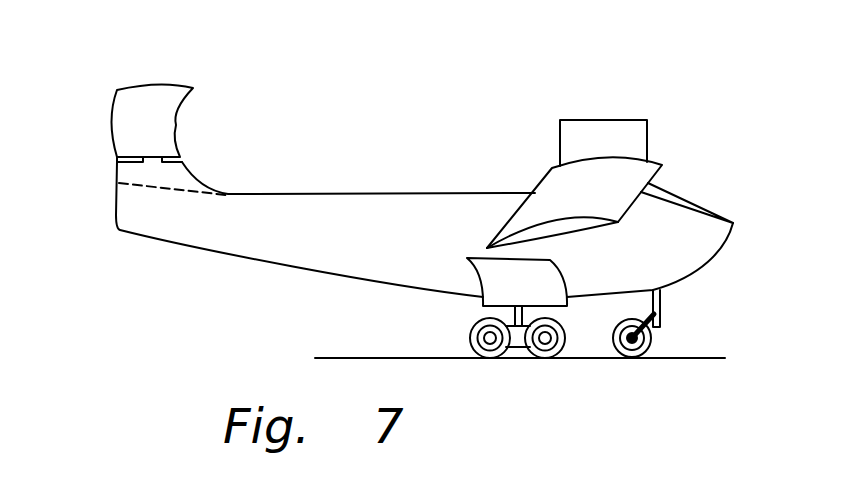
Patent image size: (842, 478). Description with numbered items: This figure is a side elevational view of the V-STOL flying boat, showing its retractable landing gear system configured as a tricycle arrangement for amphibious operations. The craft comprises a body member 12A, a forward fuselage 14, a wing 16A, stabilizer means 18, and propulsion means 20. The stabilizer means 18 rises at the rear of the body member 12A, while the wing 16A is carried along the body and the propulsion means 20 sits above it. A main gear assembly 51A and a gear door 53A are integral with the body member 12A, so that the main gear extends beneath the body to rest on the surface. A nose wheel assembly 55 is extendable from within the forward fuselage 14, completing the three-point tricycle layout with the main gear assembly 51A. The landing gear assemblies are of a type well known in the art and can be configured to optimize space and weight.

The body member 12A is at (328, 245).
The forward fuselage 14 is at (676, 198).
The wing 16A is at (544, 177).
The stabilizer means 18 is at (97, 93).
The propulsion means 20 is at (588, 120).
The main gear assembly 51A is at (547, 358).
The gear door 53A is at (570, 306).
The nose wheel assembly 55 is at (645, 358).